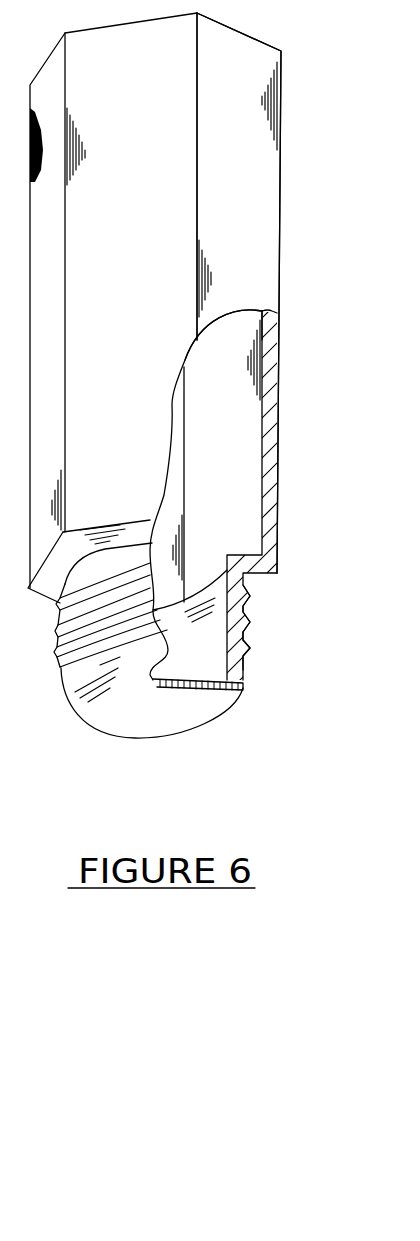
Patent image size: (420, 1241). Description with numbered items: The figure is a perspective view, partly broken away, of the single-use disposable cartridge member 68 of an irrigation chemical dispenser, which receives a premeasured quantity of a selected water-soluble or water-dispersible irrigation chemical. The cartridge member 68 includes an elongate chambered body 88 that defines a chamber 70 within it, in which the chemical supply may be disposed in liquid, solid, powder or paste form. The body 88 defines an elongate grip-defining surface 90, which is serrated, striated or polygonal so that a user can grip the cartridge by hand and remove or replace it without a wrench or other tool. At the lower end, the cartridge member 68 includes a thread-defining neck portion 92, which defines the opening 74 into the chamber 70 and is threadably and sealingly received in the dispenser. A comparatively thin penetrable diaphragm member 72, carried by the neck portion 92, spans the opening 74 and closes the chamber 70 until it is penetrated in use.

The cartridge member 68 is at (279, 163).
The grip-defining surface 90 is at (247, 191).
The elongate chambered body 88 is at (263, 332).
The chamber 70 is at (243, 428).
The opening 74 is at (248, 620).
The thread-defining neck portion 92 is at (248, 652).
The penetrable diaphragm member 72 is at (205, 710).